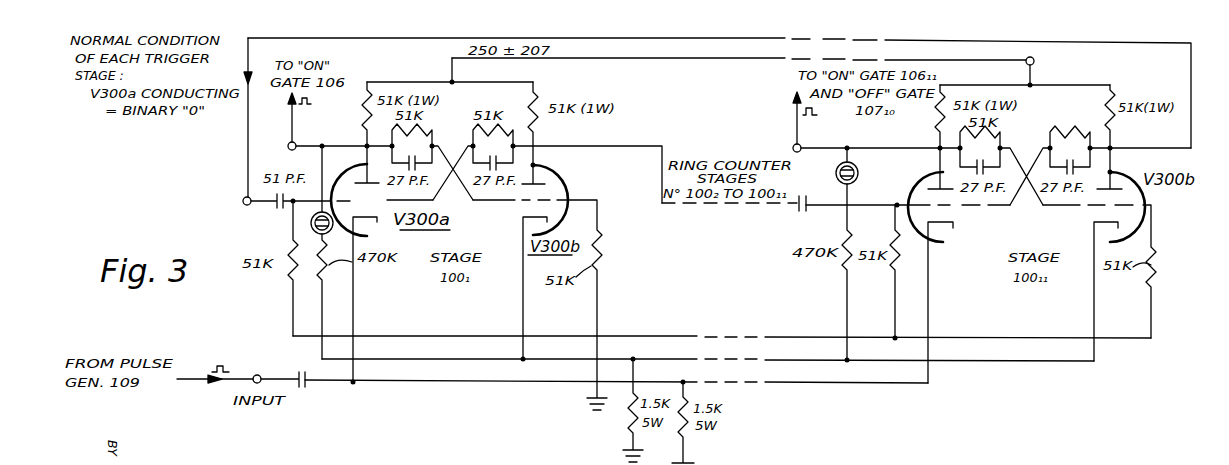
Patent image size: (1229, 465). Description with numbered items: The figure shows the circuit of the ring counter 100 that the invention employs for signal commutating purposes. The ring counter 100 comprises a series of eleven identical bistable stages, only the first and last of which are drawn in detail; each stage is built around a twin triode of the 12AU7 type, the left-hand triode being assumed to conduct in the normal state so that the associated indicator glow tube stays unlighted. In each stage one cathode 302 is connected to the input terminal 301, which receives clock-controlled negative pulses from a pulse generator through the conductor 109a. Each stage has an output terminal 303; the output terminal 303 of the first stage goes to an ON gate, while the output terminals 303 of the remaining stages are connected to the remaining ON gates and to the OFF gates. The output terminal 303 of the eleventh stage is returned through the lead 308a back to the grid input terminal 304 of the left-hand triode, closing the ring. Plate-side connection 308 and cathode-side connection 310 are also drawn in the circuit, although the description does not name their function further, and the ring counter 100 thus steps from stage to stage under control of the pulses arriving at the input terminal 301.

The ring counter 100 is at (1032, 438).
The input terminal 301 is at (283, 363).
The cathode 302 is at (353, 309).
The output terminal 303 is at (296, 141).
The grid input terminal 304 is at (245, 206).
The plate output terminal 308 is at (1112, 146).
The lead 308a is at (605, 39).
The cathode connection lead 310 is at (522, 319).
The conductor 109a is at (221, 383).